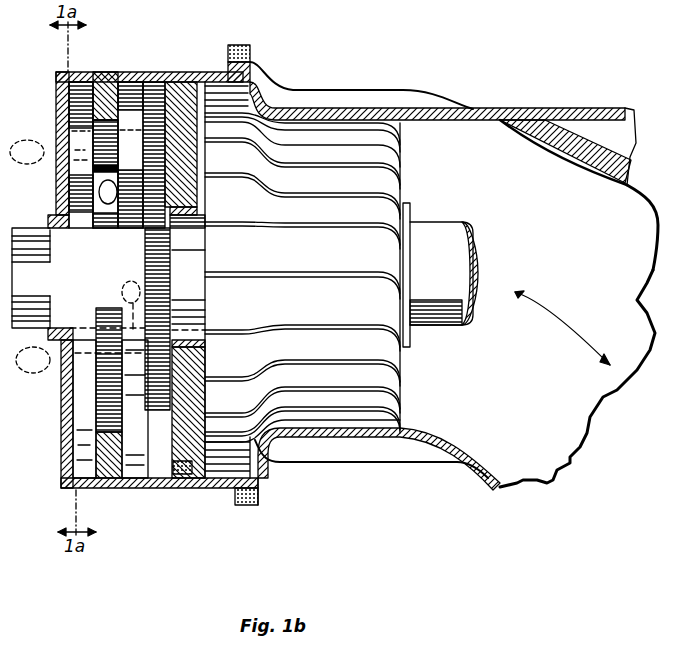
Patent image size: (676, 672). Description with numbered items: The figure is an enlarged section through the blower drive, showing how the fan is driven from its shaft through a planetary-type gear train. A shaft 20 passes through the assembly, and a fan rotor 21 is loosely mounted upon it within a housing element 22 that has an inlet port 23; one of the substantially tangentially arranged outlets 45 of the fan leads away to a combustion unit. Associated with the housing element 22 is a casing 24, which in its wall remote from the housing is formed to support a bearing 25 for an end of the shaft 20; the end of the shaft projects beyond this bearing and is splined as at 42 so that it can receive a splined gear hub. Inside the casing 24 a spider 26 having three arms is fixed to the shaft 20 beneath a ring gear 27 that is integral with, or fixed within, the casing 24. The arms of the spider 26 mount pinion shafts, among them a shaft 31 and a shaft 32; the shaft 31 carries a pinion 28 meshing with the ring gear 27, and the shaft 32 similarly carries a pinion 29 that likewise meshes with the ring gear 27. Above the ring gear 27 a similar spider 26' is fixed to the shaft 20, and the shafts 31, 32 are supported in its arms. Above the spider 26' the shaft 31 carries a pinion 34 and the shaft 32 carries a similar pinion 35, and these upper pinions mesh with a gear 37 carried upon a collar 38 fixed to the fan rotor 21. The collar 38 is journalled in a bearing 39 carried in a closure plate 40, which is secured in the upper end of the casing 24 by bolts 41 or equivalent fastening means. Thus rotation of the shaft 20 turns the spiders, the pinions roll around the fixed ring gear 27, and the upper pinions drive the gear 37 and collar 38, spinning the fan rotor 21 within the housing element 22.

The shaft 20 is at (468, 250).
The fan rotor 21 is at (397, 188).
The housing element 22 is at (447, 112).
The inlet port 23 is at (565, 443).
The casing 24 is at (193, 73).
The bearing 25 is at (67, 220).
The spider 26 is at (54, 155).
The spider 26' is at (139, 409).
The ring gear 27 is at (103, 116).
The pinion 28 is at (120, 126).
The pinion 29 is at (65, 393).
The shaft 31 is at (85, 134).
The shaft 32 is at (82, 355).
The pinion 34 is at (153, 96).
The pinion 35 is at (180, 312).
The gear 37 is at (183, 250).
The collar 38 is at (200, 330).
The bearing 39 is at (194, 206).
The closure plate 40 is at (185, 444).
The bolts 41 is at (182, 474).
The splines 42 is at (48, 233).
The outlet 45 is at (223, 485).